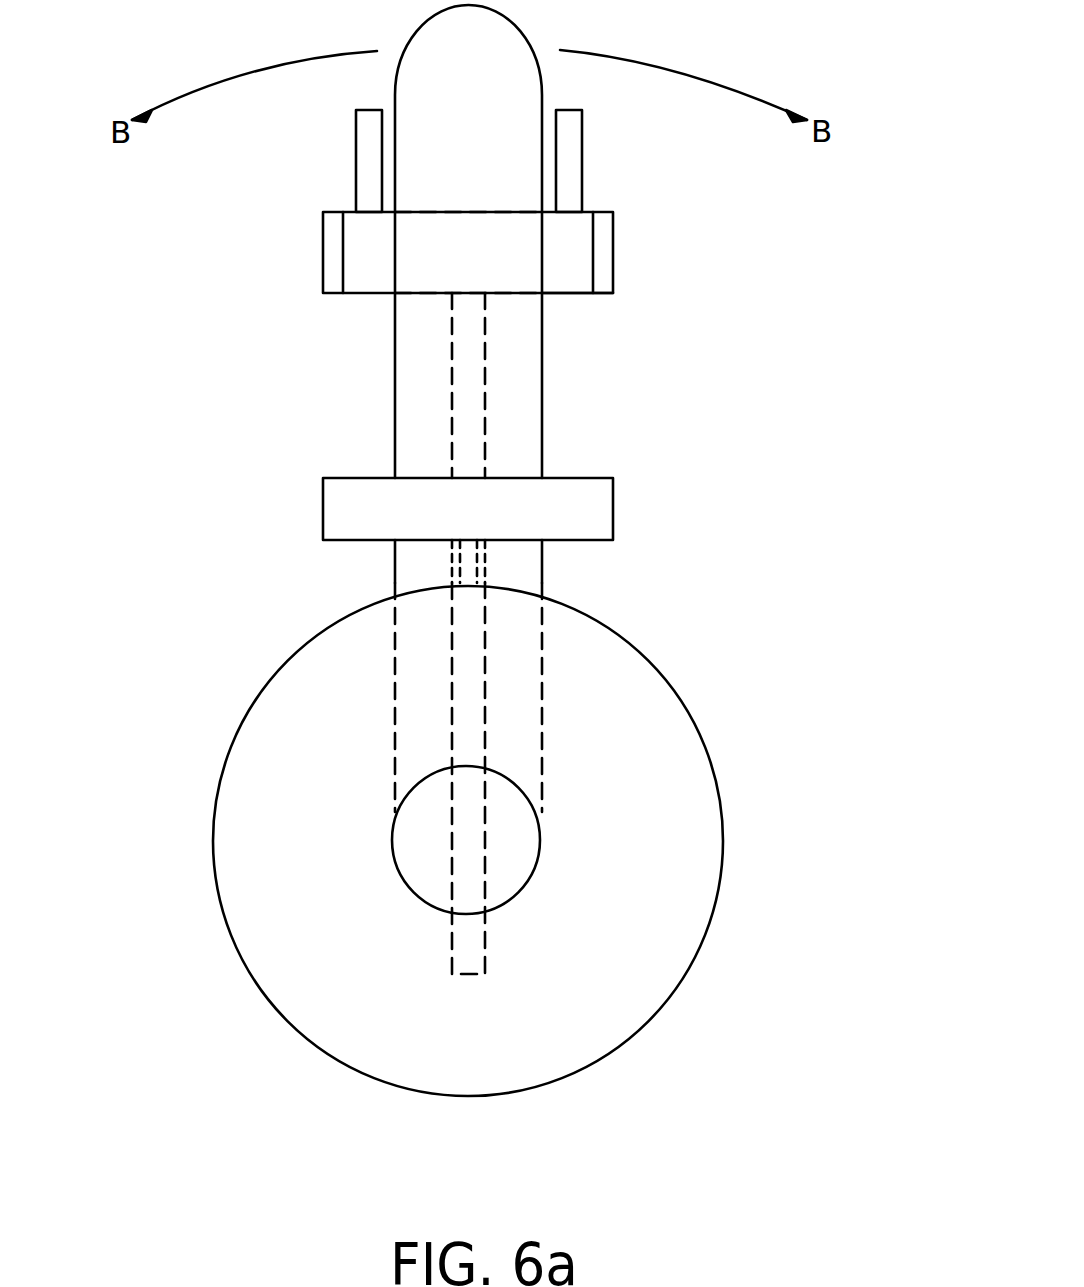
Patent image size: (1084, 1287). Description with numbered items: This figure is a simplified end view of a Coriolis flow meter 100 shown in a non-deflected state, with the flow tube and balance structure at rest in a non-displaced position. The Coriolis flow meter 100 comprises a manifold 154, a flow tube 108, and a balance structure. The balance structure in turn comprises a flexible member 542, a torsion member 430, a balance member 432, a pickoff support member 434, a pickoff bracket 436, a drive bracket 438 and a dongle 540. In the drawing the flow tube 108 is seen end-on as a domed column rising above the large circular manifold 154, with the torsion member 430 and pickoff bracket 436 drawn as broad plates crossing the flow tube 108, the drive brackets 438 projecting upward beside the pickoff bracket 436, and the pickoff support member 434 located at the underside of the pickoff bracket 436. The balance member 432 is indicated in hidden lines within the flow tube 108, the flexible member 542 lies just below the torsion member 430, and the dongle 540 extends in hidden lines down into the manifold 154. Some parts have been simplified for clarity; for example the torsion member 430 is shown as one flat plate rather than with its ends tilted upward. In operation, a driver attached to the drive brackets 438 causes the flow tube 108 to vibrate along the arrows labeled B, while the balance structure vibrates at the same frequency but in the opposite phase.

The Coriolis flow meter 100 is at (270, 327).
The flow tube 108 is at (528, 42).
The drive bracket 438 is at (582, 130).
The pickoff bracket 436 is at (613, 260).
The pickoff support member 434 is at (570, 293).
The balance member 432 is at (485, 400).
The torsion member 430 is at (613, 508).
The flexible member 542 is at (485, 560).
The manifold 154 is at (723, 857).
The dongle 540 is at (481, 947).